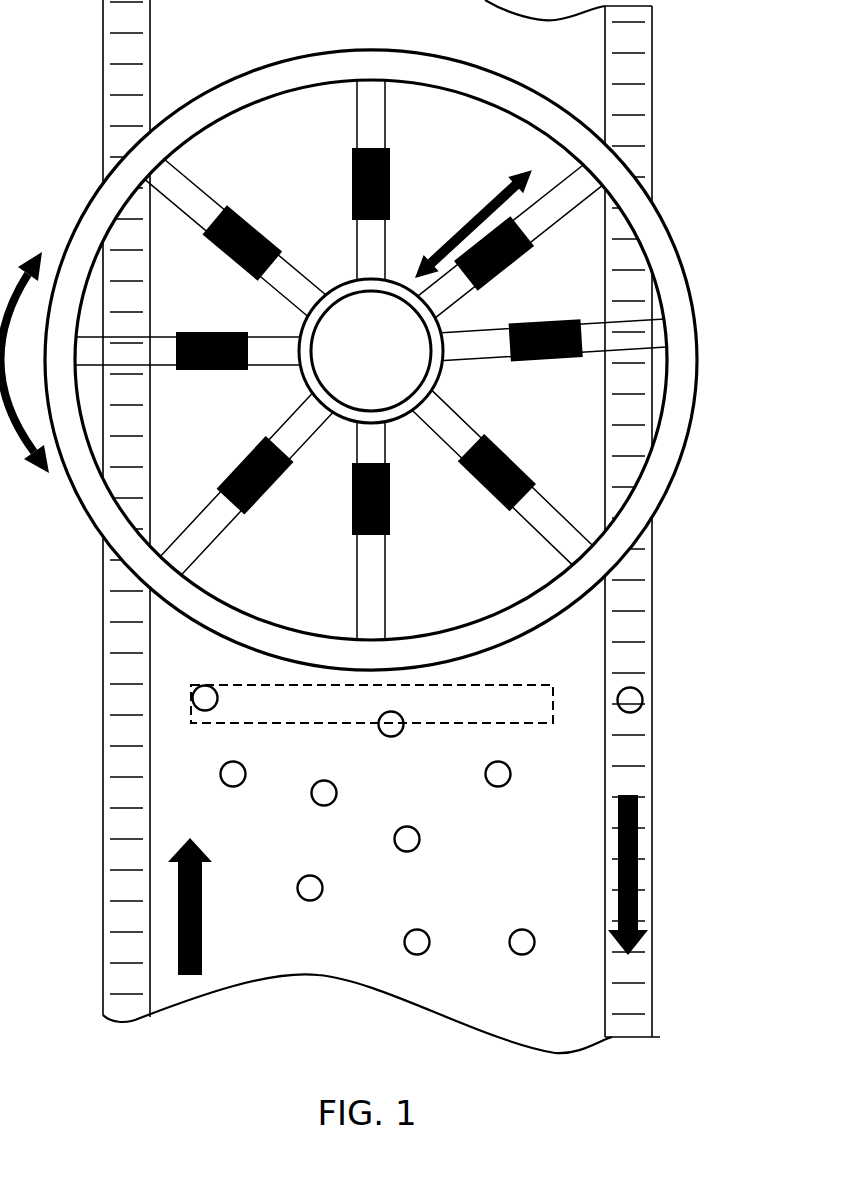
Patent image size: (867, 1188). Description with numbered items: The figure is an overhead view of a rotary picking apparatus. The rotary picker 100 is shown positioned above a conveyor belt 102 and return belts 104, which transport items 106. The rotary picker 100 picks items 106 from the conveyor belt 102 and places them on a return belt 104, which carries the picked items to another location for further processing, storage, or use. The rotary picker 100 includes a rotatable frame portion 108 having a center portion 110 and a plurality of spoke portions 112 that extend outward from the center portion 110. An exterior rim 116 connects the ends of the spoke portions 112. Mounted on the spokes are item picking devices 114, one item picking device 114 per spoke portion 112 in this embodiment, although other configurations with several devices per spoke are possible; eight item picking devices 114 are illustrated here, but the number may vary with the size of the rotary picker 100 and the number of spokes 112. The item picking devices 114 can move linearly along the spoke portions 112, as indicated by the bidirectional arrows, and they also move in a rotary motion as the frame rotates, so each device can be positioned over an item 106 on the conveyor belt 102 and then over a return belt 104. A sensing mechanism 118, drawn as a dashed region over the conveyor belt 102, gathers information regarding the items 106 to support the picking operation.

The rotary picker 100 is at (412, 360).
The conveyor belt 102 is at (373, 526).
The return belt 104 is at (158, 715).
The items 106 is at (395, 740).
The rotatable frame portion 108 is at (408, 426).
The center portion 110 is at (352, 361).
The spoke portions 112 is at (210, 198).
The item picking devices 114 is at (350, 192).
The exterior rim 116 is at (697, 377).
The sensing mechanism 118 is at (505, 683).